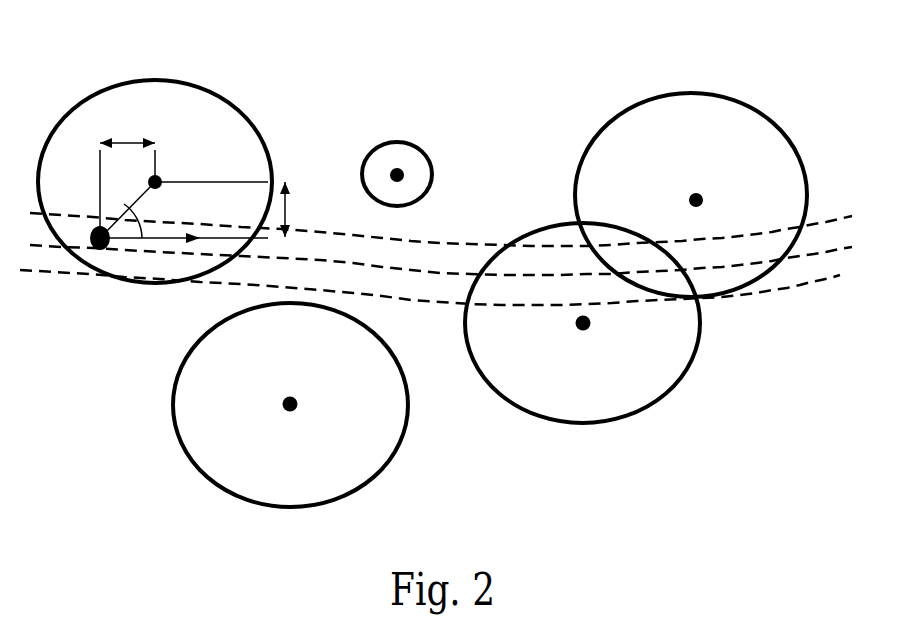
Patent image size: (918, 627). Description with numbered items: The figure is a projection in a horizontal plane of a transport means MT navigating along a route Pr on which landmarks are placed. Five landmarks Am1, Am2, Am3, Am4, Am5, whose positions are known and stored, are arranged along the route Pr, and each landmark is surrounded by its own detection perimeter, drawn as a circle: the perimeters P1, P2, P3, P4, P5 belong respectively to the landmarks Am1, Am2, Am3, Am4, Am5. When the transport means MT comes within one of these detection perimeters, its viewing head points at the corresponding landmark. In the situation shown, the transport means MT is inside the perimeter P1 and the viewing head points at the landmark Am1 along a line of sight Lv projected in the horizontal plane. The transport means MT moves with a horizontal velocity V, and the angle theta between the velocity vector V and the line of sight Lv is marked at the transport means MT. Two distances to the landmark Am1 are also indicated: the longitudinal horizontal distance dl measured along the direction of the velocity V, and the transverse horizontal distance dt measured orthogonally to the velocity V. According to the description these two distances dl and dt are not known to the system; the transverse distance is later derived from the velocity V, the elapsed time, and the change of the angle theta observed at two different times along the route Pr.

The detection perimeter P1 is at (202, 88).
The detection perimeter P2 is at (433, 168).
The detection perimeter P3 is at (217, 485).
The detection perimeter P4 is at (607, 423).
The detection perimeter P5 is at (705, 97).
The landmark Am1 is at (158, 175).
The landmark Am2 is at (405, 165).
The landmark Am3 is at (297, 412).
The landmark Am4 is at (590, 330).
The landmark Am5 is at (705, 193).
The transport means MT is at (96, 250).
The route Pr is at (807, 257).
The longitudinal horizontal distance dl is at (127, 174).
The transverse horizontal distance dt is at (295, 209).
The line of sight Lv is at (127, 209).
The horizontal velocity V is at (184, 229).
The angle theta is at (142, 225).